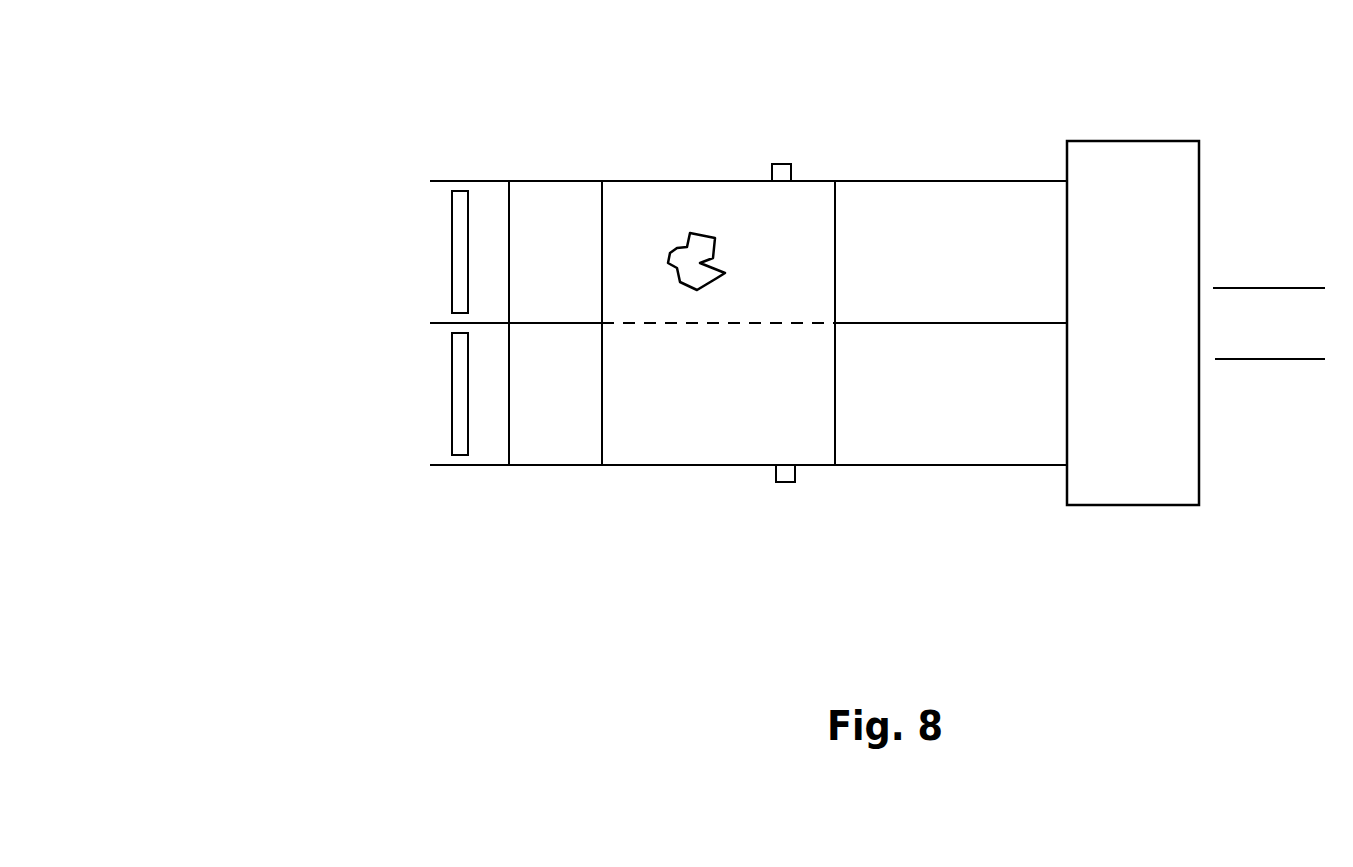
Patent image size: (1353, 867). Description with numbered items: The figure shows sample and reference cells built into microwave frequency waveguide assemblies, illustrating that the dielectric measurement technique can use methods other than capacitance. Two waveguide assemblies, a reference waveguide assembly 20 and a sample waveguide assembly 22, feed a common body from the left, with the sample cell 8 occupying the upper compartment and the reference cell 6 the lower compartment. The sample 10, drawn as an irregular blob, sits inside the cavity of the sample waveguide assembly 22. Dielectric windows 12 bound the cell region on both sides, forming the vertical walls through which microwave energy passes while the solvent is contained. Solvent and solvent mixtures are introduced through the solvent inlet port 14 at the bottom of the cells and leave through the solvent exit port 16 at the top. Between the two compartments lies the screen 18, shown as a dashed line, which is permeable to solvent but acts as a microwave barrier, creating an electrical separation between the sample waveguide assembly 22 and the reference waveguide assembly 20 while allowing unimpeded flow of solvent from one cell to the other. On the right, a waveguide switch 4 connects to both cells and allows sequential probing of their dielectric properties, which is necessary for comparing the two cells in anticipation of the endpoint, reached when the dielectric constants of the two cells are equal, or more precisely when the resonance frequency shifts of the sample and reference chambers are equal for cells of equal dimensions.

The waveguide switch 4 is at (1175, 477).
The reference cell 6 is at (765, 433).
The sample cell 8 is at (665, 252).
The sample 10 is at (766, 187).
The dielectric windows 12 is at (895, 256).
The solvent inlet port 14 is at (898, 491).
The solvent exit port 16 is at (885, 154).
The screen 18 is at (662, 350).
The reference waveguide assembly 20 is at (428, 387).
The sample waveguide assembly 22 is at (428, 247).